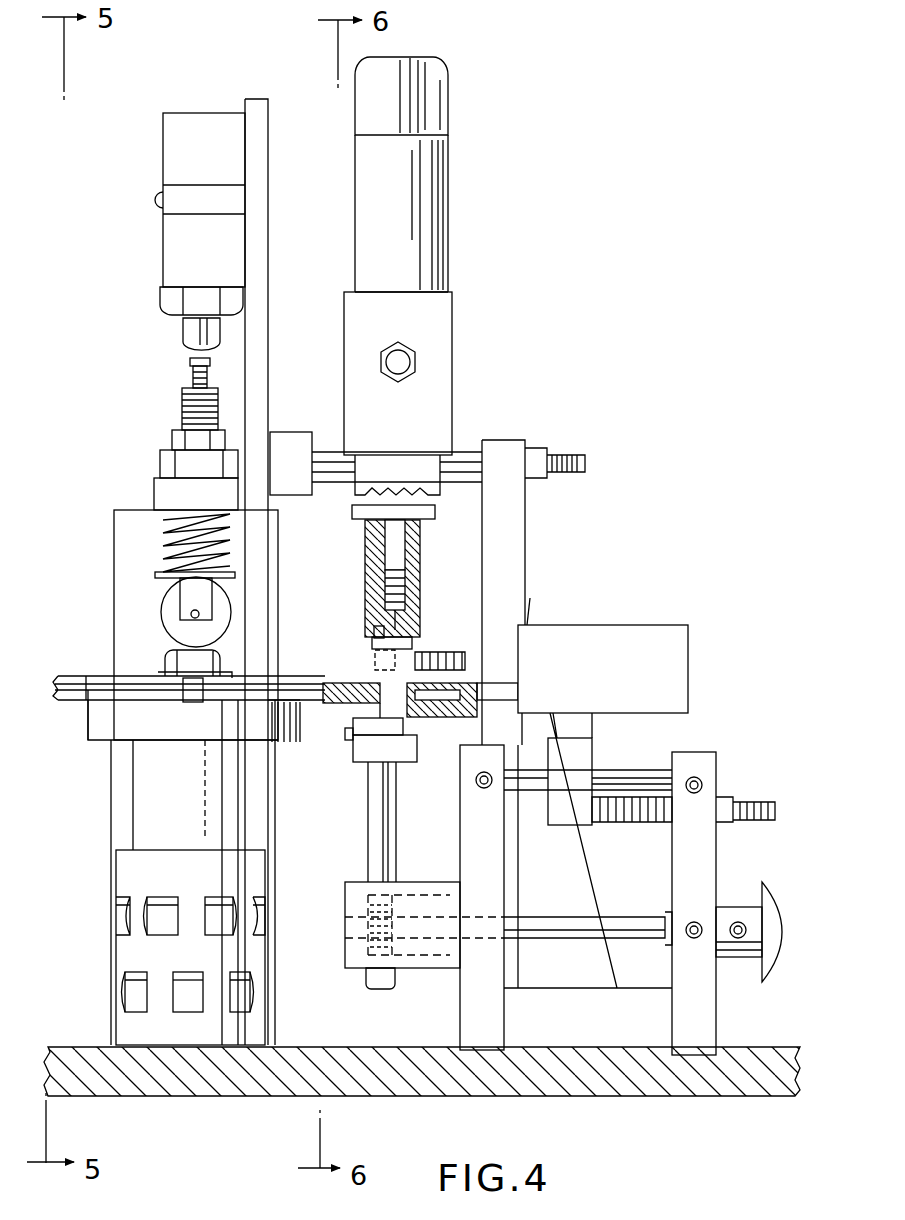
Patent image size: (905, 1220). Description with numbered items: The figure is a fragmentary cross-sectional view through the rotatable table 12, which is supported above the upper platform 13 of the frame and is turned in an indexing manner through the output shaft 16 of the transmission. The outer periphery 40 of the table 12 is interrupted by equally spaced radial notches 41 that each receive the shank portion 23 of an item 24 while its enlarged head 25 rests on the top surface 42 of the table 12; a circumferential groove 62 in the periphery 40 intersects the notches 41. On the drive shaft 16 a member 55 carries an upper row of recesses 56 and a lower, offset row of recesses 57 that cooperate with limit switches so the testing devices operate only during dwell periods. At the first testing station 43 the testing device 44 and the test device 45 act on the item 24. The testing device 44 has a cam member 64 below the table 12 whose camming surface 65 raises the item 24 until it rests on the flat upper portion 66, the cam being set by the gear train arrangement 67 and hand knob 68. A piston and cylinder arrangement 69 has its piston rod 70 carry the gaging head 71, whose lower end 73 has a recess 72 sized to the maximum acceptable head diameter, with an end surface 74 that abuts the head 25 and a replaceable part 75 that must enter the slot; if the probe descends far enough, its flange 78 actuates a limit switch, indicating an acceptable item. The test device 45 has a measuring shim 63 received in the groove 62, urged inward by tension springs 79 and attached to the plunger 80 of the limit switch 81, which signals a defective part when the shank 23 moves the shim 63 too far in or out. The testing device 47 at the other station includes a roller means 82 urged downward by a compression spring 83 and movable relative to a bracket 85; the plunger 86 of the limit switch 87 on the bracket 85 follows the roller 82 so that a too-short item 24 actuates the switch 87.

The rotatable table 12 is at (70, 672).
The upper platform 13 is at (765, 1066).
The output shaft 16 is at (148, 792).
The shank portion 23 is at (383, 727).
The item 24 is at (362, 690).
The enlarged head 25 is at (400, 656).
The outer circular periphery 40 is at (100, 700).
The notches 41 is at (185, 700).
The top surface 42 is at (88, 676).
The first testing station 43 is at (468, 640).
The testing device 44 is at (465, 260).
The test device 45 is at (458, 748).
The testing device 47 is at (145, 415).
The member 55 is at (135, 868).
The recesses 56 is at (270, 912).
The recesses 57 is at (255, 993).
The circumferential groove 62 is at (266, 690).
The measuring shim 63 is at (398, 712).
The cam member 64 is at (405, 752).
The camming surface 65 is at (380, 735).
The flat upper portion 66 is at (378, 716).
The gear train arrangement 67 is at (345, 945).
The hand knob 68 is at (780, 908).
The piston and cylinder arrangement 69 is at (432, 205).
The piston rod 70 is at (398, 470).
The gaging head 71 is at (372, 560).
The recess 72 is at (394, 640).
The lower end 73 is at (372, 643).
The end surface 74 is at (382, 625).
The adjustable and replaceable part 75 is at (374, 633).
The flange 78 is at (352, 515).
The tension springs 79 is at (446, 656).
The plunger 80 is at (492, 688).
The limit switch 81 is at (672, 672).
The roller means 82 is at (170, 602).
The compression spring 83 is at (165, 538).
The bracket 85 is at (160, 492).
The plunger 86 is at (190, 330).
The limit switch 87 is at (170, 250).